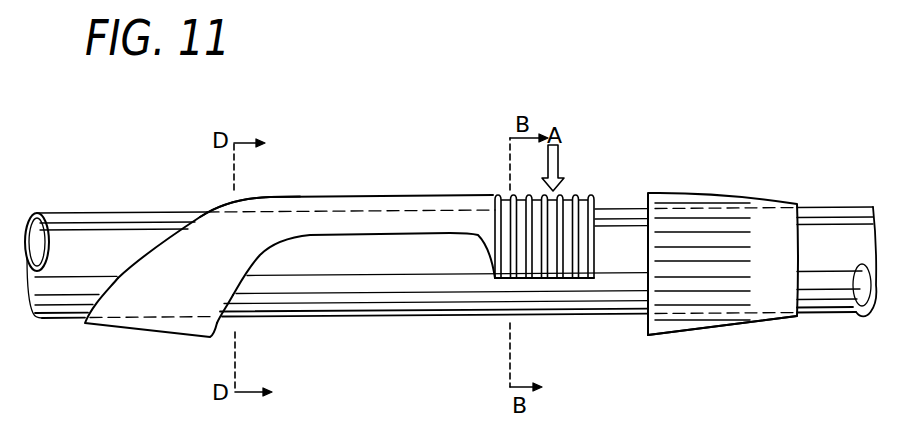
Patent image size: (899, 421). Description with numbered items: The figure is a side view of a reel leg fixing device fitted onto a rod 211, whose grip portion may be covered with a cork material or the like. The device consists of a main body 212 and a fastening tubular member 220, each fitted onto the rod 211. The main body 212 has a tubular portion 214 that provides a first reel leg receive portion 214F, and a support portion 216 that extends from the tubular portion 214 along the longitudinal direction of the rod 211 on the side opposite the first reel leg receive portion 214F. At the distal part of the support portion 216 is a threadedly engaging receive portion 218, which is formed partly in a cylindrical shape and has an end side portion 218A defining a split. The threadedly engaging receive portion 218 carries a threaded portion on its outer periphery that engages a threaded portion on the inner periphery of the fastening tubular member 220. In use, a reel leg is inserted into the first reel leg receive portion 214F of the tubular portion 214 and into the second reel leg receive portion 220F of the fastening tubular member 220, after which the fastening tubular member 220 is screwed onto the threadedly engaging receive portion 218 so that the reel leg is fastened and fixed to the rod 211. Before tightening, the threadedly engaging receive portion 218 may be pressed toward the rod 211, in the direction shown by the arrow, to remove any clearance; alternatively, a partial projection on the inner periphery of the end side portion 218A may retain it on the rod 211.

The rod 211 is at (83, 240).
The main body 212 is at (348, 192).
The tubular portion 214 is at (122, 298).
The first reel leg receive portion 214F is at (220, 327).
The support portion 216 is at (291, 223).
The threadedly engaging receive portion 218 is at (575, 192).
The end side portion 218A is at (557, 279).
The fastening tubular member 220 is at (708, 223).
The second reel leg receive portion 220F is at (650, 321).